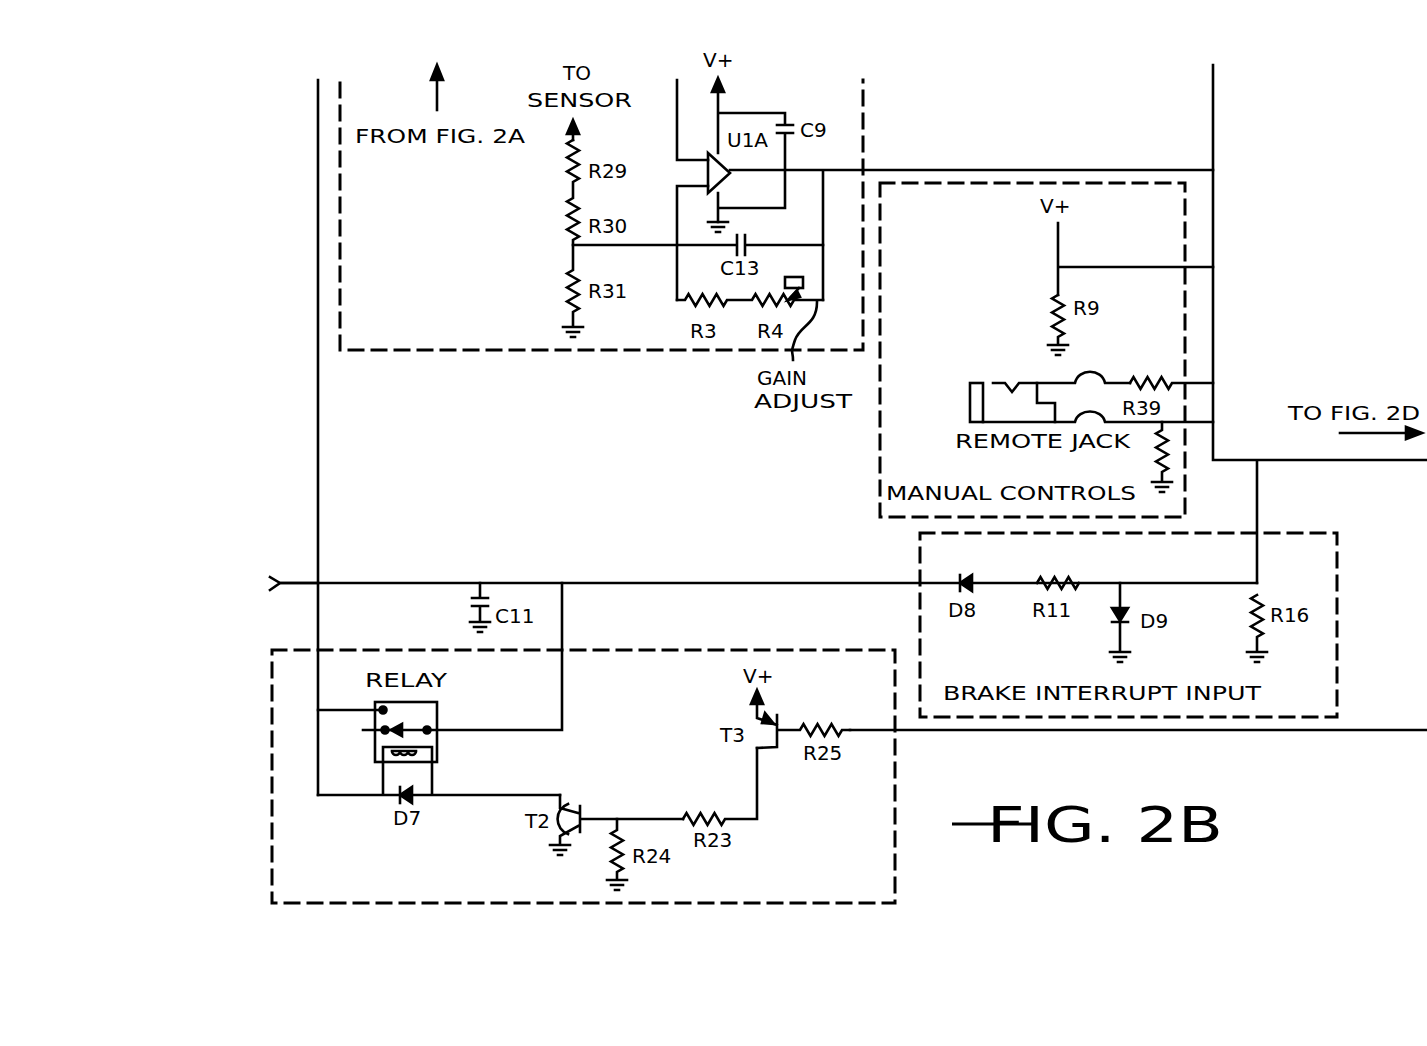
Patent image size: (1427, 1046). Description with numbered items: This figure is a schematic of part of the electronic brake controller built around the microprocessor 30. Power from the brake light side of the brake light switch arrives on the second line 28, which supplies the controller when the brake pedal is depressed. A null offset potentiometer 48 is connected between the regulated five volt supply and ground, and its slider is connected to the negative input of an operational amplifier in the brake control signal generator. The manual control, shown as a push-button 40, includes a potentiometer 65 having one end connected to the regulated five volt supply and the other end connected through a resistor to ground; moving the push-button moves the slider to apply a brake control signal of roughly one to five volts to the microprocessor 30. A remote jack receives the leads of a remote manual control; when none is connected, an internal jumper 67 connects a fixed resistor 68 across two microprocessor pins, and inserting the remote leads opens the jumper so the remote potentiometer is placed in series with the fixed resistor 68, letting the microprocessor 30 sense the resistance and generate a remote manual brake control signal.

The second line 28 is at (285, 575).
The microprocessor 30 is at (1327, 266).
The push-button 40 is at (1053, 296).
The null offset potentiometer 48 is at (568, 208).
The potentiometer 65 is at (1067, 252).
The internal jumper 67 is at (1060, 411).
The fixed resistor 68 is at (1143, 378).